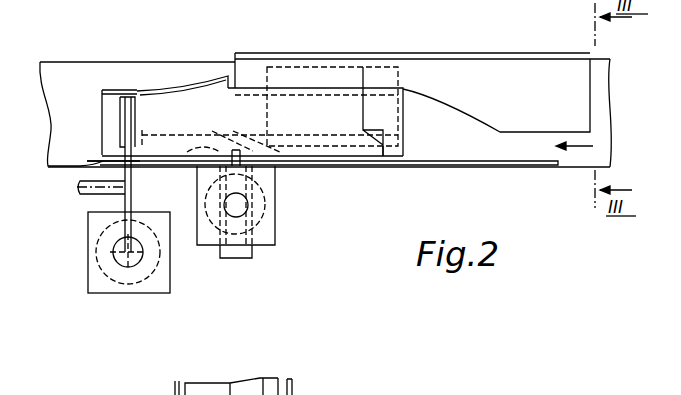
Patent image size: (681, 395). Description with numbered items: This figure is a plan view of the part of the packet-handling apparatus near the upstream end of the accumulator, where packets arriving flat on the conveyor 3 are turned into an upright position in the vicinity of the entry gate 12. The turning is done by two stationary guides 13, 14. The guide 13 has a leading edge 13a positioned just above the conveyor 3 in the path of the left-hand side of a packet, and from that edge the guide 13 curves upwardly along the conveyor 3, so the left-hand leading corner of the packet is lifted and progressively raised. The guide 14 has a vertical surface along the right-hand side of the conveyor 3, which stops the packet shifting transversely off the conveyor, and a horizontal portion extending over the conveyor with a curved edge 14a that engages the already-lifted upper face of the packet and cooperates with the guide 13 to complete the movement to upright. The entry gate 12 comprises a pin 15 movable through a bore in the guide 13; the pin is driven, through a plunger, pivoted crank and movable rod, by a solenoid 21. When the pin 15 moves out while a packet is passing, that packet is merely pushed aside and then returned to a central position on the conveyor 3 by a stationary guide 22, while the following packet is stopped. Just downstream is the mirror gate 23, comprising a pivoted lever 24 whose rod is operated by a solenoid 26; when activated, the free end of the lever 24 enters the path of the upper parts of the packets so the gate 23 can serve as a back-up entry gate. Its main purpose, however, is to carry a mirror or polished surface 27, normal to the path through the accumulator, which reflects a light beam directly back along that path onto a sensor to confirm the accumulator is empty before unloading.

The conveyor 3 is at (145, 72).
The entry gate 12 is at (277, 168).
The stationary guide 13 is at (370, 156).
The leading edge 13a is at (392, 165).
The stationary guide 14 is at (458, 83).
The curved edge 14a is at (467, 118).
The pin 15 is at (200, 153).
The solenoid 21 is at (272, 237).
The stationary guide 22 is at (208, 82).
The mirror gate 23 is at (88, 203).
The pivoted lever 24 is at (103, 163).
The solenoid 26 is at (102, 225).
The mirror surface 27 is at (122, 113).